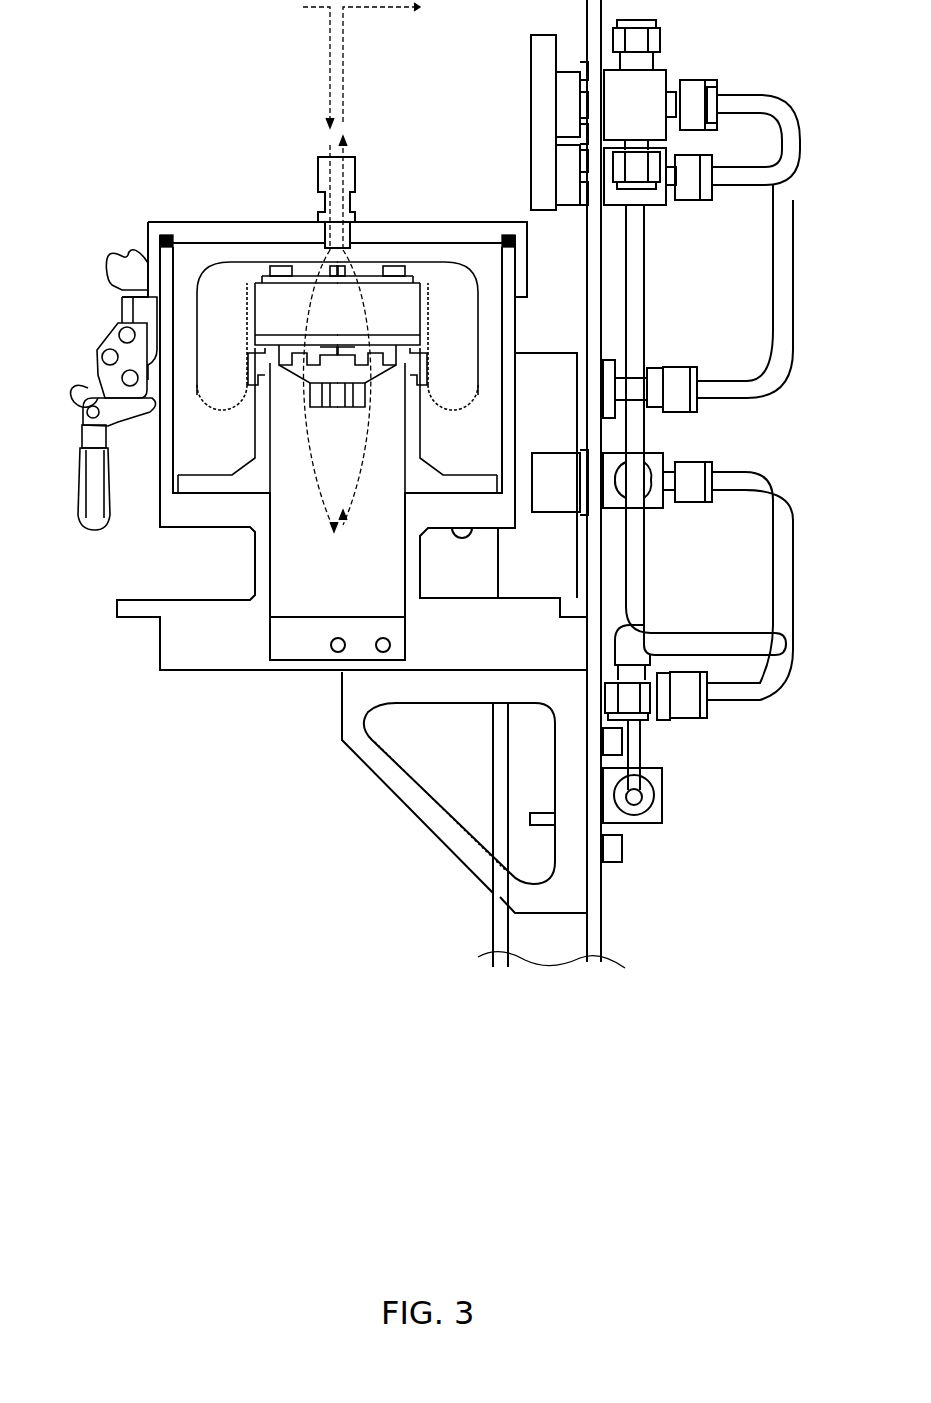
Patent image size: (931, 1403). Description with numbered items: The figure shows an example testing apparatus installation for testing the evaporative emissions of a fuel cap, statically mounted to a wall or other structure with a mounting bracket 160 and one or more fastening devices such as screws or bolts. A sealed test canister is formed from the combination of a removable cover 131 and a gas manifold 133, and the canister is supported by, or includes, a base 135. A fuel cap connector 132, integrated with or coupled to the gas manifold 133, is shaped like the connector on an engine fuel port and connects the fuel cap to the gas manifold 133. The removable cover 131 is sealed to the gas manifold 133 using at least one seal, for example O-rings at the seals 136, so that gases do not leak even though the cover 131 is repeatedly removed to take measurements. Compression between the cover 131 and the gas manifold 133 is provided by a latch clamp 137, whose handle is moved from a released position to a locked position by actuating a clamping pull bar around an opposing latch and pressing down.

The removable cover 131 is at (397, 222).
The fuel cap connector 132 is at (233, 440).
The gas manifold 133 is at (510, 330).
The base 135 is at (432, 596).
The seals 136 is at (175, 238).
The latch clamp 137 is at (96, 520).
The mounting bracket 160 is at (357, 748).